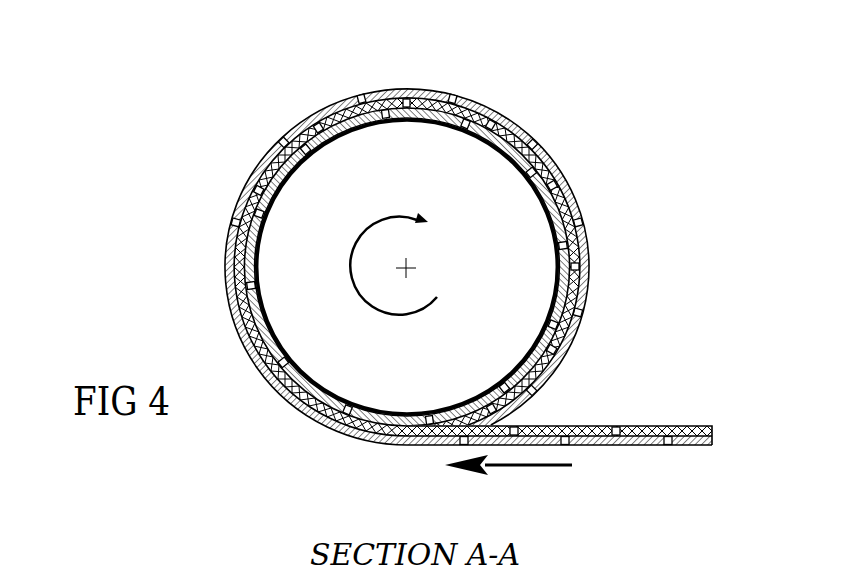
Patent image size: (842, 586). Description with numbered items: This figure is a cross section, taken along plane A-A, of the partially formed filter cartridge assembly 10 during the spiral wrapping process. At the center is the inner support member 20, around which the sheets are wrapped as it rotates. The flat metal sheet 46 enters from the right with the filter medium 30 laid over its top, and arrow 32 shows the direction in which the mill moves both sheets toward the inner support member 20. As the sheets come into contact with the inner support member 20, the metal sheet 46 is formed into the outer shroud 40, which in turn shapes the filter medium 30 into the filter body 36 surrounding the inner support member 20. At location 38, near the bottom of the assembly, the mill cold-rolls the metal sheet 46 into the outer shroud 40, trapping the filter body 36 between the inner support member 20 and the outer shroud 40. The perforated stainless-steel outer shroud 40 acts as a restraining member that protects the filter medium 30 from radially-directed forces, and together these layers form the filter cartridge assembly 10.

The filter cartridge assembly 10 is at (207, 185).
The inner support member 20 is at (582, 297).
The filter medium 30 is at (605, 425).
The arrow 32 is at (523, 467).
The filter body 36 is at (557, 167).
The location 38 is at (373, 445).
The outer shroud 40 is at (485, 106).
The metal sheet 46 is at (632, 446).